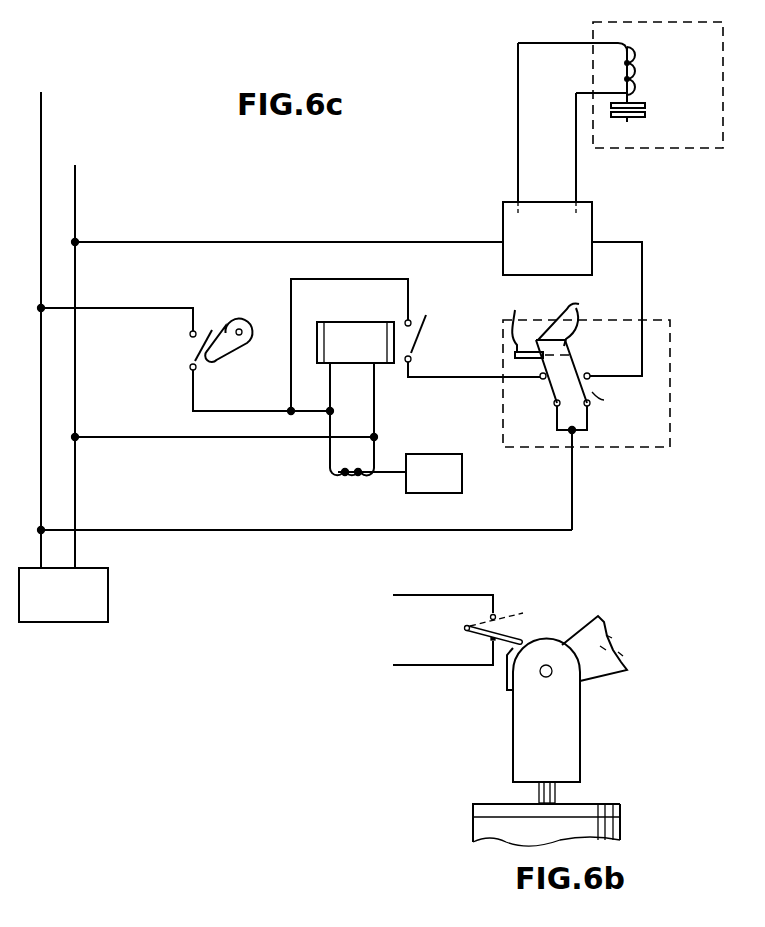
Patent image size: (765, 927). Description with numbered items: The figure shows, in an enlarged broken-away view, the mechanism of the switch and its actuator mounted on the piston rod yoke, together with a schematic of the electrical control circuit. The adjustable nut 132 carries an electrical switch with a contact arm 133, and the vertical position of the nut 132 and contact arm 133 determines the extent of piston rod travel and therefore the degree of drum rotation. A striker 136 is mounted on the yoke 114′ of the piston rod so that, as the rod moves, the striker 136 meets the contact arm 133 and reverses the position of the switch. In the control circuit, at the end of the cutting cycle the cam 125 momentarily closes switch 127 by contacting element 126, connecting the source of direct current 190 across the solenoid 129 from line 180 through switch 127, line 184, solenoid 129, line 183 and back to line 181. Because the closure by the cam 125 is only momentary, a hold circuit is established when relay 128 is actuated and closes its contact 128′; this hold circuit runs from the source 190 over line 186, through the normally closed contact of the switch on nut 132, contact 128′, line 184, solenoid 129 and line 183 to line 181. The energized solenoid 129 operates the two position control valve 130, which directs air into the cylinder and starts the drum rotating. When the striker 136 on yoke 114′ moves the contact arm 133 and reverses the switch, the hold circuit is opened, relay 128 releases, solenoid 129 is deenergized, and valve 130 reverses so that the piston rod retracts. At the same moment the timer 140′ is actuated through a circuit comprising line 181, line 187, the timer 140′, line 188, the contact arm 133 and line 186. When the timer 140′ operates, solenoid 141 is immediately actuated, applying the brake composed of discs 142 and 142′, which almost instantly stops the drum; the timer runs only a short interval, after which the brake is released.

In FIG. 6B, the yoke 114′ is at (520, 723).
In FIG. 6C, the cam 125 is at (220, 320).
In FIG. 6C, the element 126 is at (190, 335).
In FIG. 6C, the switch 127 is at (190, 363).
In FIG. 6C, the relay 128 is at (342, 322).
In FIG. 6C, the contact 128′ is at (420, 336).
In FIG. 6C, the solenoid 129 is at (333, 477).
In FIG. 6C, the two position control valve 130 is at (459, 479).
In FIG. 6C, the adjustable nut 132 is at (654, 318).
In FIG. 6B, the adjustable nut 132 is at (481, 637).
In FIG. 6C, the contact arm 133 is at (567, 309).
In FIG. 6B, the contact arm 133 is at (520, 640).
In FIG. 6C, the striker 136 is at (516, 312).
In FIG. 6B, the striker 136 is at (507, 688).
In FIG. 6C, the timer 140′ is at (503, 215).
In FIG. 6C, the solenoid 141 is at (634, 51).
In FIG. 6C, the disc 142 is at (650, 112).
In FIG. 6C, the disc 142′ is at (647, 100).
In FIG. 6C, the line 180 is at (41, 476).
In FIG. 6C, the line 181 is at (75, 495).
In FIG. 6C, the line 183 is at (378, 443).
In FIG. 6C, the line 184 is at (298, 413).
In FIG. 6C, the line 186 is at (402, 531).
In FIG. 6C, the line 187 is at (318, 233).
In FIG. 6C, the line 188 is at (644, 229).
In FIG. 6C, the source of direct current 190 is at (109, 578).